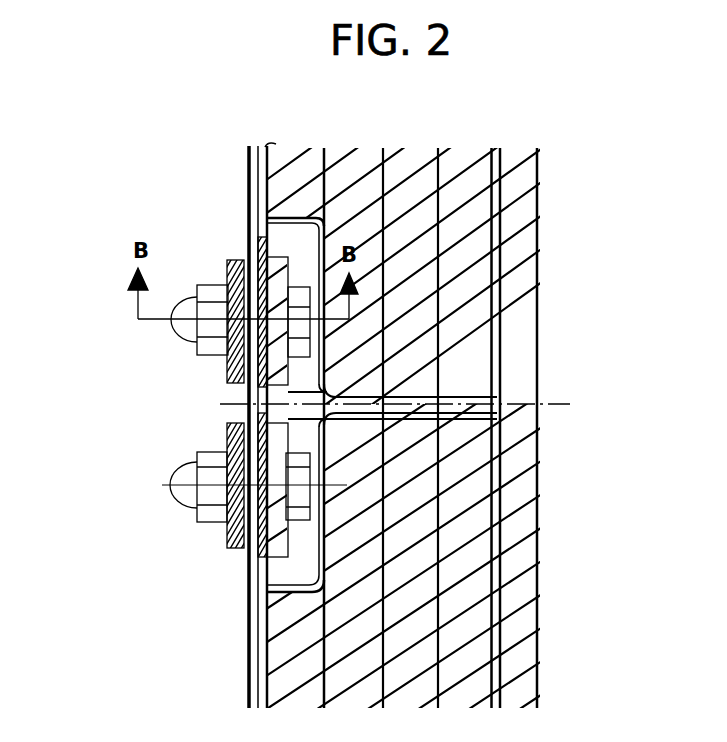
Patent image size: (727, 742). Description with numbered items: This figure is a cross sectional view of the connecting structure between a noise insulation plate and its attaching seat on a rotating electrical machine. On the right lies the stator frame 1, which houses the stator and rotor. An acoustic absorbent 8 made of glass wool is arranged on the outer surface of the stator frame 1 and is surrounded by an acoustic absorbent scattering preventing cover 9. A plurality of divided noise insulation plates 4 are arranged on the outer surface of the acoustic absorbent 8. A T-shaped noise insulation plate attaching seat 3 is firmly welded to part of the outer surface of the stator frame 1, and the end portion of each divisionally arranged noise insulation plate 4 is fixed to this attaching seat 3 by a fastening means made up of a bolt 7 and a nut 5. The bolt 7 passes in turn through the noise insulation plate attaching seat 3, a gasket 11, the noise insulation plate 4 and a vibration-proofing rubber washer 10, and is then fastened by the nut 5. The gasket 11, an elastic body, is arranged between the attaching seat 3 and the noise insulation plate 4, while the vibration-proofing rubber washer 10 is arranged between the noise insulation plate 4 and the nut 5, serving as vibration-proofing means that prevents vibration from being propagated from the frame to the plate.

The stator frame 1 is at (517, 512).
The noise insulation plate attaching seat 3 is at (275, 292).
The noise insulation plate 4 is at (248, 658).
The nut 5 is at (217, 482).
The bolt 7 is at (300, 490).
The acoustic absorbent 8 is at (453, 248).
The acoustic absorbent scattering preventing cover 9 is at (445, 390).
The vibration-proofing rubber washer 10 is at (227, 438).
The gasket 11 is at (247, 562).